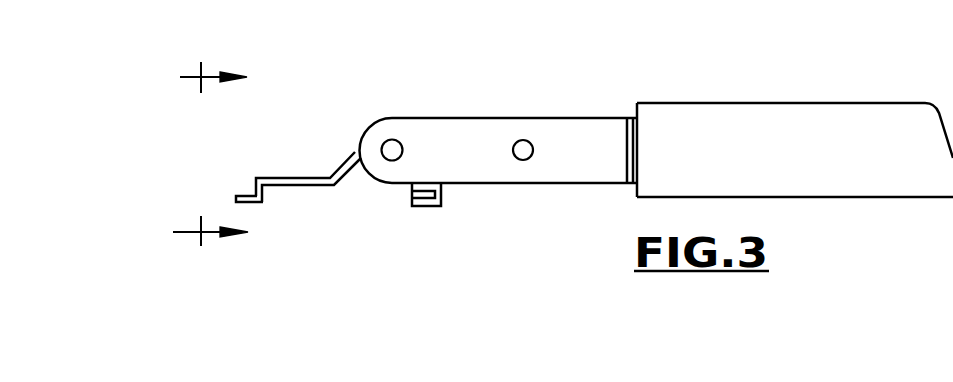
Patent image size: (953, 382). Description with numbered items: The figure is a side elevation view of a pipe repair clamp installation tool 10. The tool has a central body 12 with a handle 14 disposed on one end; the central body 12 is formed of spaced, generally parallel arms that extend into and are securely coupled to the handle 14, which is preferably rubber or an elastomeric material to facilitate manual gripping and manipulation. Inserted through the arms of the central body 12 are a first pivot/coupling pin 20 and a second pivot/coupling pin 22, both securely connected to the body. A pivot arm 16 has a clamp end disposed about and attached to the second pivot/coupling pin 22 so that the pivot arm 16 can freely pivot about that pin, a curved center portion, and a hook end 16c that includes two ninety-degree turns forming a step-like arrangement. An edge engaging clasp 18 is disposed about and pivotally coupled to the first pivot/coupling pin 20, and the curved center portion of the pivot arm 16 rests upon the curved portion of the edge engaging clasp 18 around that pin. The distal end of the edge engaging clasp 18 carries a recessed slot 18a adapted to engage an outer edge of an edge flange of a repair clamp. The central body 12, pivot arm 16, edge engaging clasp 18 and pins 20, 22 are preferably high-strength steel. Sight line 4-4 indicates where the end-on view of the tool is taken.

The sight line 4- 4 is at (210, 155).
The pipe repair clamp installation tool 10 is at (852, 93).
The central body 12 is at (456, 117).
The handle 14 is at (800, 164).
The pivot arm 16 is at (329, 179).
The hook end 16c is at (251, 193).
The edge engaging clasp 18 is at (441, 196).
The recessed slot 18a is at (431, 193).
The first pivot/coupling pin 20 is at (390, 146).
The second pivot/coupling pin 22 is at (530, 143).